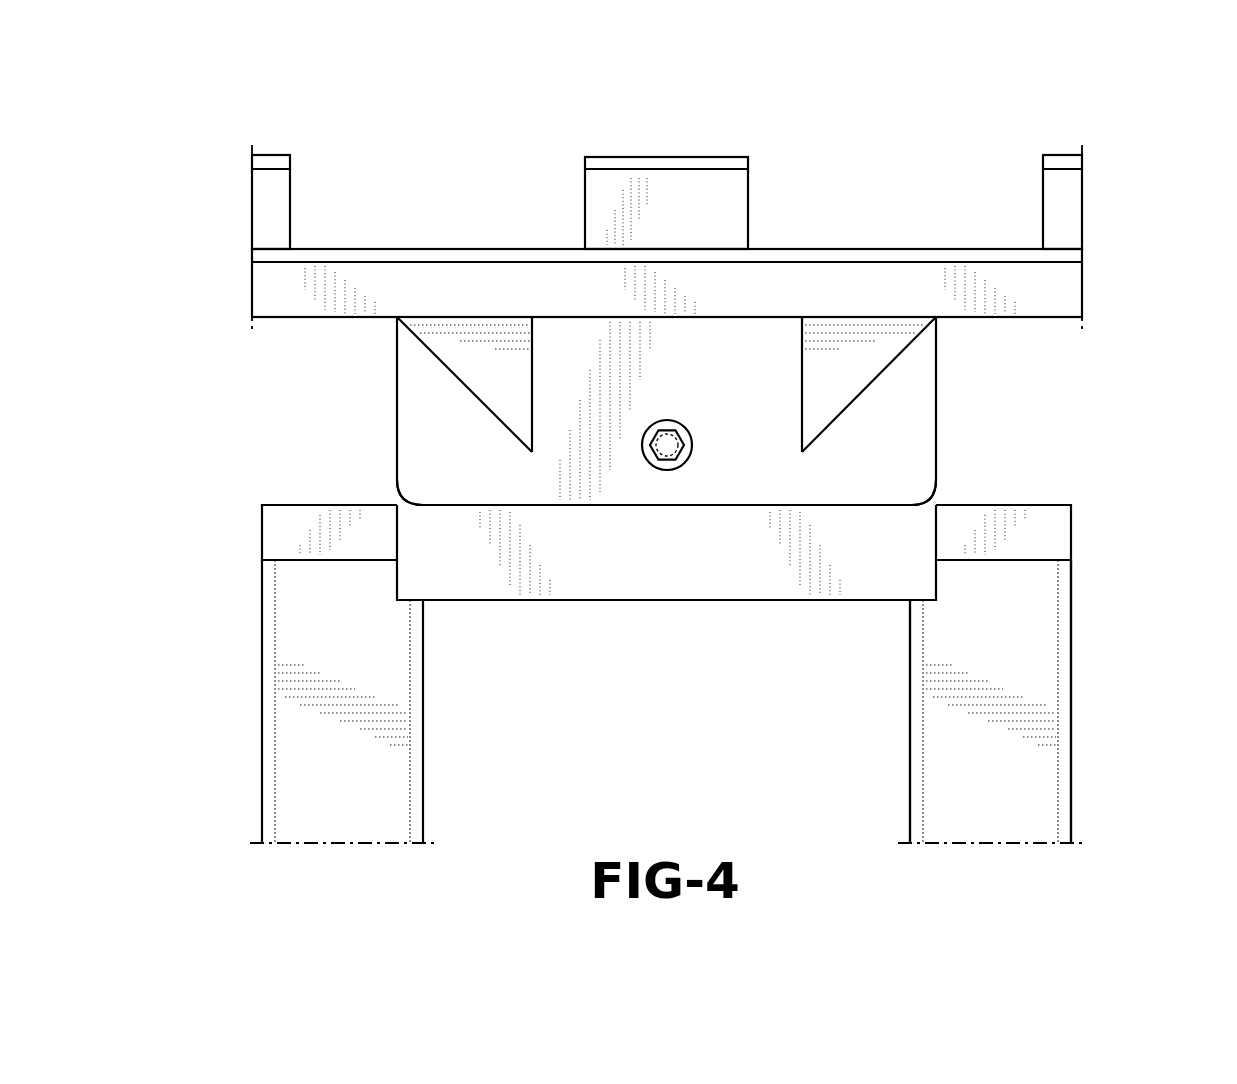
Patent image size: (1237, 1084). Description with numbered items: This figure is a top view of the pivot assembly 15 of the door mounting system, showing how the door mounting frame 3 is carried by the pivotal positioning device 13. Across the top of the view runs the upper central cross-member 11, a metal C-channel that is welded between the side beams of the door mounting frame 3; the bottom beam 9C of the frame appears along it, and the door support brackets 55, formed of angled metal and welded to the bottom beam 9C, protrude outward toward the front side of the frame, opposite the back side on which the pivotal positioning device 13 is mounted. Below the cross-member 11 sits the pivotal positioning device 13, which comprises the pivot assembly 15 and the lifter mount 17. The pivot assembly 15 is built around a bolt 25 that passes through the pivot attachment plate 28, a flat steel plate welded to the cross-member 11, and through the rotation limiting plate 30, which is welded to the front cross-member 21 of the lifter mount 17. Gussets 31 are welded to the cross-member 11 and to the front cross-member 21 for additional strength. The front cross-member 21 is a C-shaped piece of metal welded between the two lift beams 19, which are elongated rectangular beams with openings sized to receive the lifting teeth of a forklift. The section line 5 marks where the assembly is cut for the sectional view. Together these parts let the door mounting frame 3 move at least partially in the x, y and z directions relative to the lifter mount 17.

The door mounting frame 3 is at (432, 243).
The section line 5- 5 is at (667, 240).
The bottom beam 9C is at (517, 248).
The upper central cross-member 11 is at (306, 305).
The pivotal positioning device 13 is at (1096, 771).
The pivot assembly 15 is at (752, 366).
The lifter mount 17 is at (1076, 666).
The lift beams 19 is at (297, 793).
The front cross-member 21 is at (274, 532).
The bolt 25 is at (667, 420).
The pivot attachment plate 28 is at (720, 480).
The rotation limiting plate 30 is at (602, 572).
The gussets 31 is at (484, 382).
The door support brackets 55 is at (290, 188).